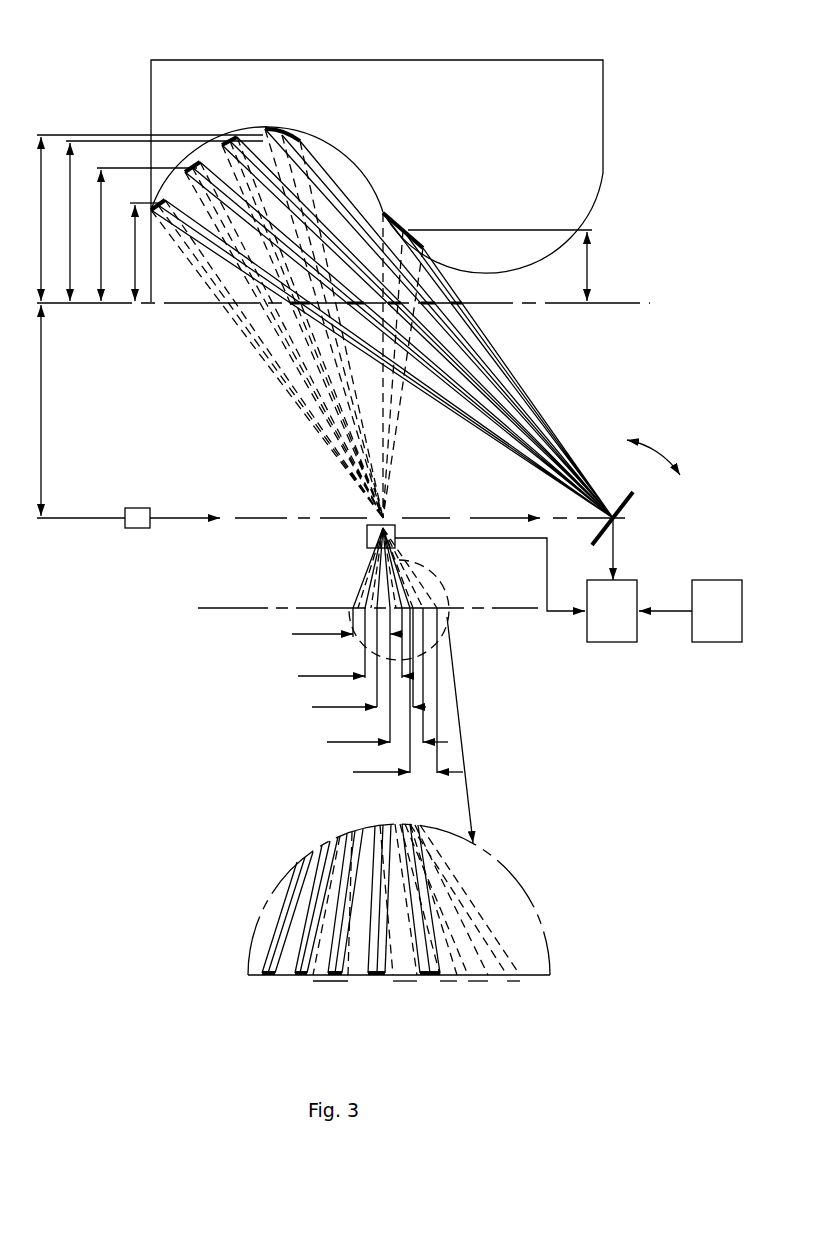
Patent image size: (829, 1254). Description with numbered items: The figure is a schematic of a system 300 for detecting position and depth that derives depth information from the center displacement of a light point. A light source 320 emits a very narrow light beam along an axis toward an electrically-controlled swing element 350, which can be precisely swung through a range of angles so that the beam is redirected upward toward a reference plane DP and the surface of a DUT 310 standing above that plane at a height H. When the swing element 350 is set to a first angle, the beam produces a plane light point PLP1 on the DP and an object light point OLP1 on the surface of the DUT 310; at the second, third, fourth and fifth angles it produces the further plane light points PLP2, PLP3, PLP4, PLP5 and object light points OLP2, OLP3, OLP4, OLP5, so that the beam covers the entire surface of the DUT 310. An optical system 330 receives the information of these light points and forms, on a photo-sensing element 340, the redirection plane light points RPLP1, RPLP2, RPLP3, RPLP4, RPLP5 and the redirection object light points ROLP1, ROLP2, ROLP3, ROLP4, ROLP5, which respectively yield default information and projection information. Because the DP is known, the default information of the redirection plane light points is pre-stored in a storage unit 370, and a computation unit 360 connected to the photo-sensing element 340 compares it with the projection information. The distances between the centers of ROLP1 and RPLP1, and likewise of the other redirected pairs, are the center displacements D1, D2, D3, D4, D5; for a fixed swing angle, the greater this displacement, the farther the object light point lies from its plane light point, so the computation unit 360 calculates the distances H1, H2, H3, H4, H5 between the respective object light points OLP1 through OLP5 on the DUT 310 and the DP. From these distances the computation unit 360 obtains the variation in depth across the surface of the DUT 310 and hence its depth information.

The system for detecting position and depth 300 is at (668, 19).
The DUT 310 is at (445, 72).
The light source 320 is at (132, 523).
The optical system 330 is at (366, 542).
The photo-sensing element 340 is at (477, 605).
The electrically-controlled swing element 350 is at (608, 532).
The computation unit 360 is at (613, 635).
The storage unit 370 is at (717, 635).
The object light point OLP1 is at (407, 230).
The object light point OLP2 is at (282, 134).
The object light point OLP3 is at (230, 140).
The object light point OLP4 is at (193, 167).
The object light point OLP5 is at (158, 205).
The plane light point PLP1 is at (458, 306).
The plane light point PLP2 is at (430, 312).
The plane light point PLP3 is at (400, 312).
The plane light point PLP4 is at (355, 306).
The plane light point PLP5 is at (300, 306).
The redirection plane light point RPLP1 is at (268, 972).
The redirection plane light point RPLP2 is at (300, 972).
The redirection plane light point RPLP3 is at (335, 972).
The redirection plane light point RPLP4 is at (377, 972).
The redirection plane light point RPLP5 is at (433, 972).
The redirection object light point ROLP1 is at (330, 982).
The redirection object light point ROLP2 is at (405, 982).
The redirection object light point ROLP3 is at (448, 982).
The redirection object light point ROLP4 is at (478, 982).
The redirection object light point ROLP5 is at (513, 982).
The element DP is at (623, 302).
The height between detection plane and optical axis H is at (32, 410).
The distance between OLP1 and the DP H1 is at (500, 265).
The distance between OLP2 and the DP H2 is at (142, 218).
The distance between OLP3 and the DP H3 is at (157, 221).
The distance between OLP4 and the DP H4 is at (140, 234).
The distance between OLP5 and the DP H5 is at (138, 252).
The center displacement of the light point D1 is at (347, 675).
The center displacement of the light point D2 is at (356, 643).
The center displacement of the light point D3 is at (369, 657).
The center displacement of the light point D4 is at (387, 675).
The center displacement of the light point D5 is at (408, 690).